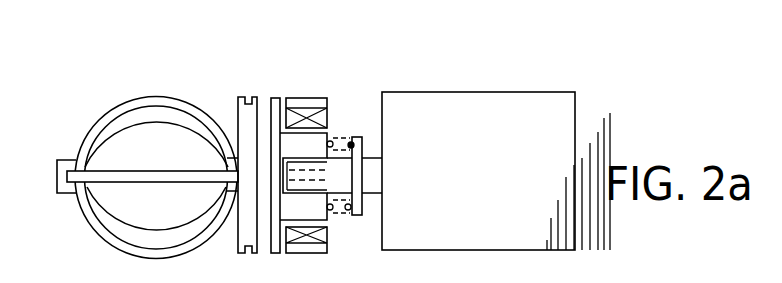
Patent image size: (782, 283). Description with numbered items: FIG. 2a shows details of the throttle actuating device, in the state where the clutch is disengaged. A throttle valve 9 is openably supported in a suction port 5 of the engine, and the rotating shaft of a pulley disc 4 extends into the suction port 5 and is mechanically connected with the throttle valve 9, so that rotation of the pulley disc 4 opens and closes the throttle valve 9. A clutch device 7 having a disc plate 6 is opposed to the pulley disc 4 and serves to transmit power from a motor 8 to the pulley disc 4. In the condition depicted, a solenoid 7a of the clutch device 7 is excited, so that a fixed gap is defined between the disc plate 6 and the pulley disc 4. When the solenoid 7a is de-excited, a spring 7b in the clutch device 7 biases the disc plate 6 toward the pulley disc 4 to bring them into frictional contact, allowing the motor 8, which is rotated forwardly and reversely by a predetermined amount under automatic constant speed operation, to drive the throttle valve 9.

The pulley disc 4 is at (244, 116).
The suction port 5 is at (135, 98).
The disc plate 6 is at (275, 97).
The clutch device 7 is at (295, 98).
The solenoid 7a is at (307, 112).
The spring 7b is at (338, 212).
The motor 8 is at (503, 103).
The throttle valve 9 is at (118, 200).